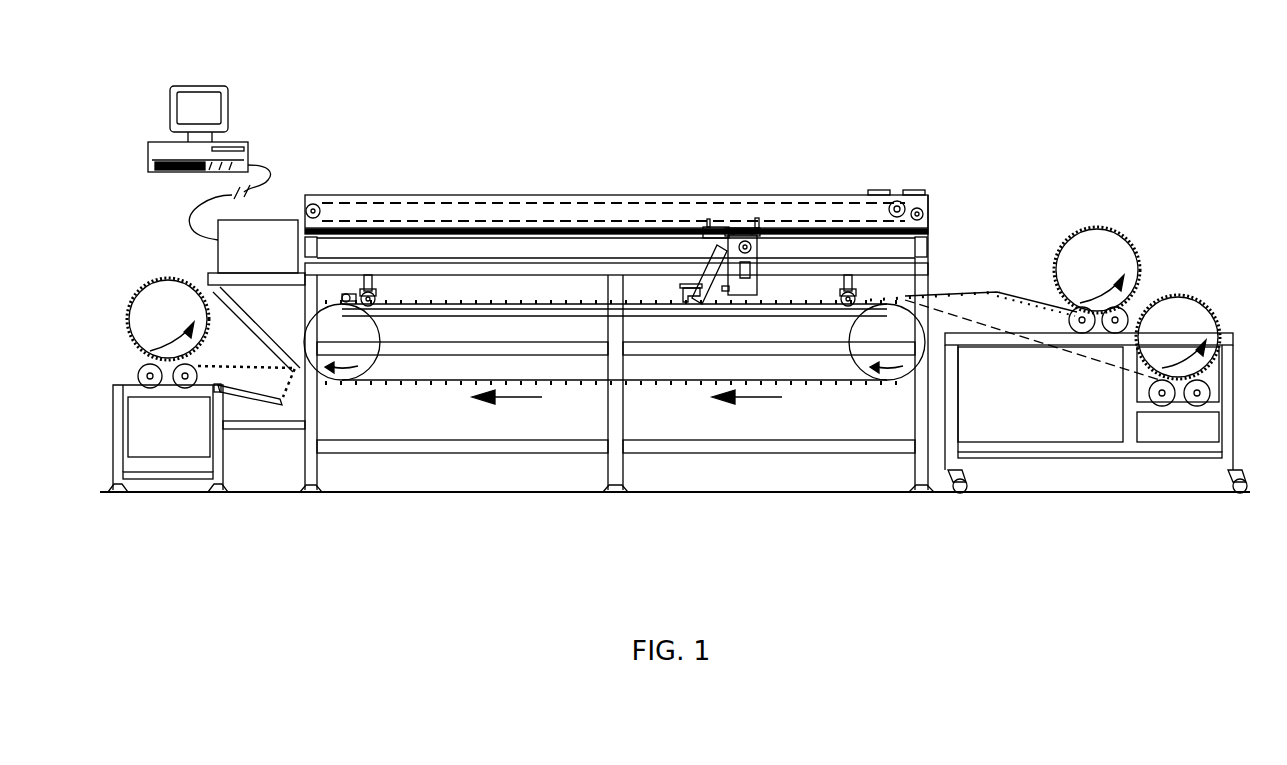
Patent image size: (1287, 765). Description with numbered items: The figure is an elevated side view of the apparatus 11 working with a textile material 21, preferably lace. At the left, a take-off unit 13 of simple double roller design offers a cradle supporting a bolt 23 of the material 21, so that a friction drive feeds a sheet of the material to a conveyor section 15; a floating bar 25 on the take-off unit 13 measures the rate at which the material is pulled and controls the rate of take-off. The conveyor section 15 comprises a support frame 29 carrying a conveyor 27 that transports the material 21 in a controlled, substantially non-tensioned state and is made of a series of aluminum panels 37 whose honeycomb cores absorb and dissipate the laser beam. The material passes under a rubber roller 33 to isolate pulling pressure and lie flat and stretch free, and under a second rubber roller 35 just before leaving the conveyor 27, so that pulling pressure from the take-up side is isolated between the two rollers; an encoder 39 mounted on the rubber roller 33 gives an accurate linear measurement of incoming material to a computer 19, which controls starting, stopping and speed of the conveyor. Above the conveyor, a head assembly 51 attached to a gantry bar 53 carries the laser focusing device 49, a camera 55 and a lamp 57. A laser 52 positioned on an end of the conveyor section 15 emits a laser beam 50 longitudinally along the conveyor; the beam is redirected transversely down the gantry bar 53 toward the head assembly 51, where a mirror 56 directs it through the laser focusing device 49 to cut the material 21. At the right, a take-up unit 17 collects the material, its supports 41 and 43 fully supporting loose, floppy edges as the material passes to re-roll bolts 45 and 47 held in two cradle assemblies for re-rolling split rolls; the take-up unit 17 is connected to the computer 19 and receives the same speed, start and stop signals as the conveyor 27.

The apparatus 11 is at (440, 112).
The take-off unit 13 is at (127, 420).
The conveyor section 15 is at (527, 249).
The take-up unit 17 is at (1060, 452).
The computer 19 is at (240, 142).
The textile material 21 is at (488, 303).
The bolt 23 is at (140, 288).
The floating bar 25 is at (250, 398).
The conveyor 27 is at (478, 304).
The support frame 29 is at (475, 455).
The rubber roller 33 is at (376, 298).
The second rubber roller 35 is at (842, 297).
The panels 37 is at (712, 383).
The encoder 39 is at (350, 297).
The support 41 is at (962, 318).
The support 43 is at (1005, 292).
The re-roll bolt 45 is at (1081, 289).
The re-roll bolt 47 is at (1162, 332).
The laser focusing device 49 is at (710, 297).
The laser beam 50 is at (683, 295).
The head assembly 51 is at (744, 297).
The laser 52 is at (242, 257).
The gantry bar 53 is at (758, 254).
The camera 55 is at (685, 291).
The mirror 56 is at (762, 237).
The lamp 57 is at (683, 292).